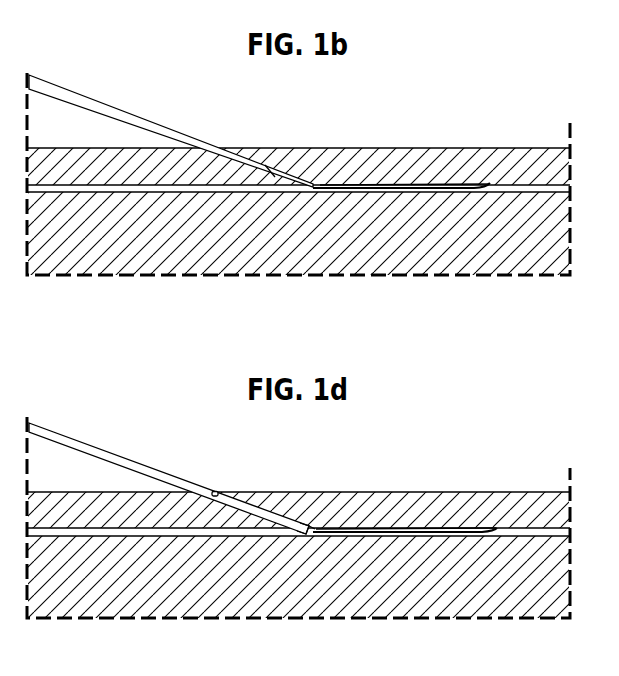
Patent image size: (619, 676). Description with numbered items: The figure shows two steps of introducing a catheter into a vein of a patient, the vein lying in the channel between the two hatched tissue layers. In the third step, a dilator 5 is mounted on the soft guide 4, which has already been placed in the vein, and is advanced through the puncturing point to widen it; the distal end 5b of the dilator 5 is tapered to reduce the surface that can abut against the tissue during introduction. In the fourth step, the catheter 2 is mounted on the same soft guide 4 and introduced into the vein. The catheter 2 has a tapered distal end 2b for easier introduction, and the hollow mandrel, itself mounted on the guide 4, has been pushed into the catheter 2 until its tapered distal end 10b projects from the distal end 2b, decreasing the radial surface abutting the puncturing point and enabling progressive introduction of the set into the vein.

In FIG. 1b, the dilator 5 is at (148, 112).
In FIG. 1b, the distal end of the dilator 5b is at (277, 175).
In FIG. 1b, the soft guide 4 is at (408, 187).
In FIG. 1d, the soft guide 4 is at (408, 530).
In FIG. 1d, the catheter 2 is at (141, 458).
In FIG. 1d, the tapered distal end of the catheter 2b is at (307, 516).
In FIG. 1d, the distal end of the mandrel 10b is at (316, 516).